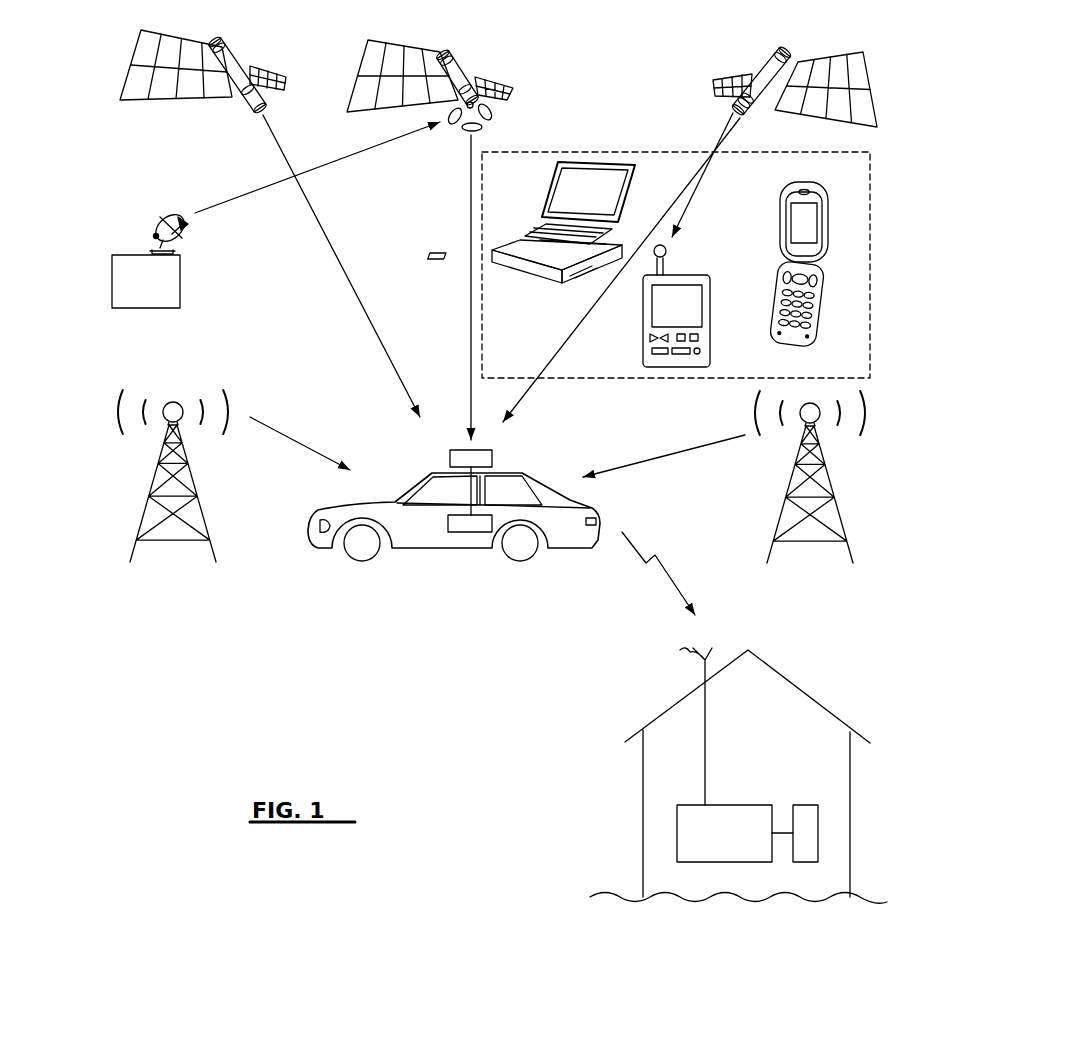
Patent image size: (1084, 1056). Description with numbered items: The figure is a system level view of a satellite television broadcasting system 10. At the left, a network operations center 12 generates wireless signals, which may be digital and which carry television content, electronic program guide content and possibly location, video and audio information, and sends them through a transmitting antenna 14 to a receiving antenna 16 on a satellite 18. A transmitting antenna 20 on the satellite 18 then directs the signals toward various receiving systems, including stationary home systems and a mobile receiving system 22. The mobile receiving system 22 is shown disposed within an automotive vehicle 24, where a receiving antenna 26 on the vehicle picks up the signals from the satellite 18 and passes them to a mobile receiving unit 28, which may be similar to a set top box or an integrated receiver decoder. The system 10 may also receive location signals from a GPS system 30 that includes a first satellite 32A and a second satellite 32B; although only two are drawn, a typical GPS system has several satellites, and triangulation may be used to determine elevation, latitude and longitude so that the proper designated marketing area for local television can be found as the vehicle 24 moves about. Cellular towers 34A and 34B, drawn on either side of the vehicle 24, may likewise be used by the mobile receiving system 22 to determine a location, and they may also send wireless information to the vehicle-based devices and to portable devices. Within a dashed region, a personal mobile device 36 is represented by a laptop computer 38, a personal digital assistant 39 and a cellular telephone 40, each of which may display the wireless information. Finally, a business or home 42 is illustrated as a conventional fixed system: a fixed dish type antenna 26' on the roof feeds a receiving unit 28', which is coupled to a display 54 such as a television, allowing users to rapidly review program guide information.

The satellite television broadcasting system 10 is at (178, 172).
The network operations center 12 is at (180, 283).
The transmitting antenna 14 is at (185, 235).
The receiving antenna 16 is at (450, 118).
The satellite 18 is at (467, 67).
The transmitting antenna 20 is at (484, 128).
The mobile receiving system 22 is at (468, 495).
The automotive vehicle 24 is at (593, 518).
The receiving antenna 26 is at (430, 481).
The antenna 26' is at (714, 697).
The mobile receiving unit 28 is at (473, 566).
The receiving unit 28' is at (728, 811).
The GPS system 30 is at (115, 53).
The first satellite 32A is at (240, 62).
The second satellite 32B is at (773, 63).
The cellular tower 34A is at (195, 482).
The cellular tower 34B is at (783, 485).
The personal mobile device 36 is at (870, 190).
The laptop computer 38 is at (527, 273).
The personal digital assistant 39 is at (698, 273).
The cellular telephone 40 is at (777, 243).
The business or home 42 is at (850, 845).
The display 54 is at (803, 804).